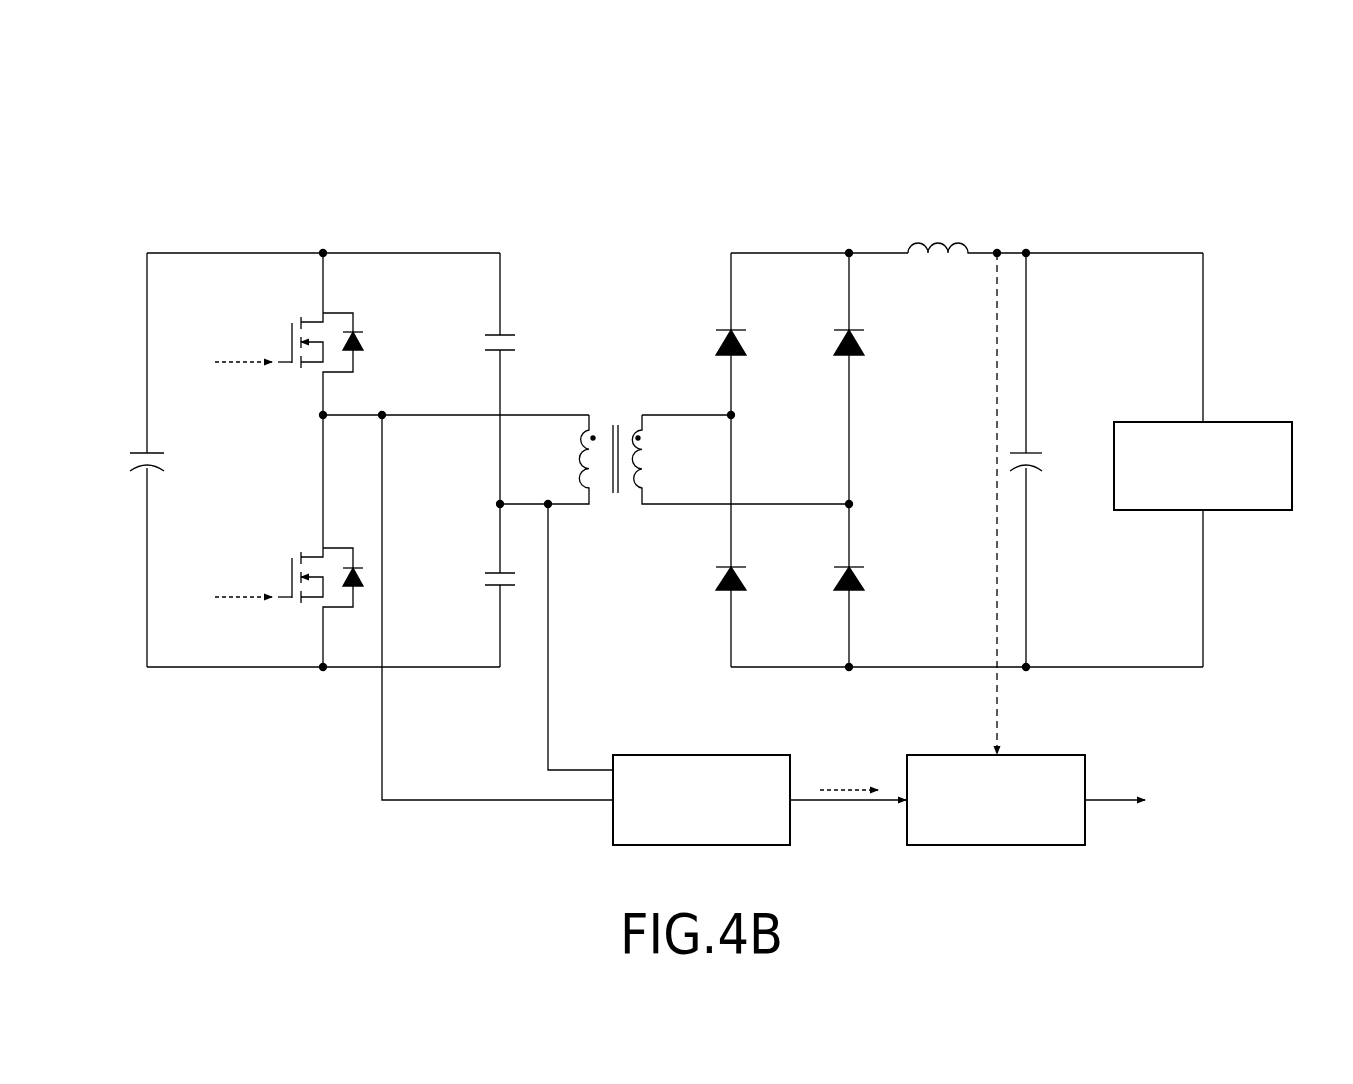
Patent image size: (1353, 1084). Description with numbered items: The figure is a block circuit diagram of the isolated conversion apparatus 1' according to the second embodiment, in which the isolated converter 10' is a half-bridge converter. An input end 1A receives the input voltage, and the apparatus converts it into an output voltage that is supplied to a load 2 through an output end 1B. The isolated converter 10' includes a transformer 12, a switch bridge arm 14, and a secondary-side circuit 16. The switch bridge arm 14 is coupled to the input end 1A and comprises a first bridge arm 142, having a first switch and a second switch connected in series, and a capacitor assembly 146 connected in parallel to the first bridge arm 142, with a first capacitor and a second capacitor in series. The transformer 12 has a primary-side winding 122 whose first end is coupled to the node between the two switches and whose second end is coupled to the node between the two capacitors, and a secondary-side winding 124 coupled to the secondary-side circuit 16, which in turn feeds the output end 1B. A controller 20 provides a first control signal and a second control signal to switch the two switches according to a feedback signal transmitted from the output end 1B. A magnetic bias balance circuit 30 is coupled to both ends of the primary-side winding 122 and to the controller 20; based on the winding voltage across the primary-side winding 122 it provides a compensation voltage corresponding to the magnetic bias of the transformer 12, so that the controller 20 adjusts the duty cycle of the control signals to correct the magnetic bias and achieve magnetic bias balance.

The isolated conversion apparatus 1' is at (700, 444).
The isolated converter 10' is at (645, 452).
The input end 1A is at (172, 251).
The switch bridge arm 14 is at (376, 232).
The first bridge arm 142 is at (322, 681).
The capacitor assembly 146 is at (499, 681).
The transformer 12 is at (615, 409).
The primary-side winding 122 is at (600, 492).
The secondary-side winding 124 is at (632, 492).
The secondary-side circuit 16 is at (821, 230).
The output end 1B is at (1013, 250).
The load 2 is at (1214, 428).
The magnetic bias balance circuit 30 is at (702, 765).
The controller 20 is at (1009, 762).